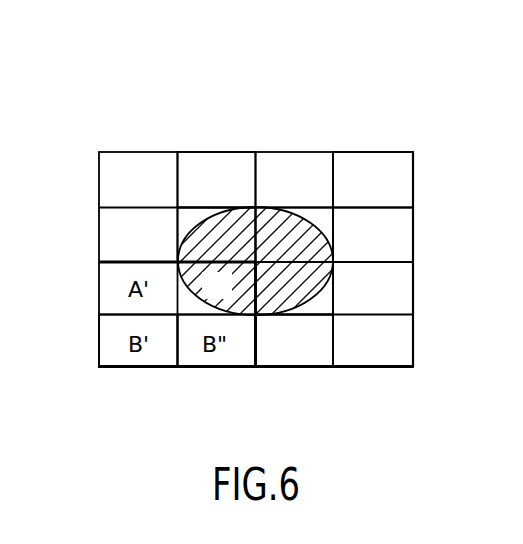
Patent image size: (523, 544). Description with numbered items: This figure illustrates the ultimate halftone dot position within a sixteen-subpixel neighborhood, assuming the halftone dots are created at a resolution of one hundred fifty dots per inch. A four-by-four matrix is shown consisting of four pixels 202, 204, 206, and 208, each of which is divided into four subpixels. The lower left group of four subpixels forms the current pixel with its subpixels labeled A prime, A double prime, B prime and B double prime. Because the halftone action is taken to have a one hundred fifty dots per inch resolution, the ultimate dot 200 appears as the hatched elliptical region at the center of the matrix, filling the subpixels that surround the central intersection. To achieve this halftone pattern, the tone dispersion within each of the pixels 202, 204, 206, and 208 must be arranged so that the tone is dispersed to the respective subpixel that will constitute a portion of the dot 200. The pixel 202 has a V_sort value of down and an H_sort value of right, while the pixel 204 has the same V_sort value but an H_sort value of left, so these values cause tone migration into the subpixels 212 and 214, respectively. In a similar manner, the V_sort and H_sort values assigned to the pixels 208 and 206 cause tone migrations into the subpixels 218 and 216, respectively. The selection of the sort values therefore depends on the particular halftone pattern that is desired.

The halftone dot 200 is at (272, 201).
The pixel 202 is at (208, 151).
The pixel 204 is at (382, 151).
The pixel 206 is at (117, 370).
The pixel 208 is at (278, 368).
The subpixel 212 is at (186, 221).
The subpixel 214 is at (320, 217).
The subpixel 216 is at (322, 306).
The subpixel 218 is at (190, 305).